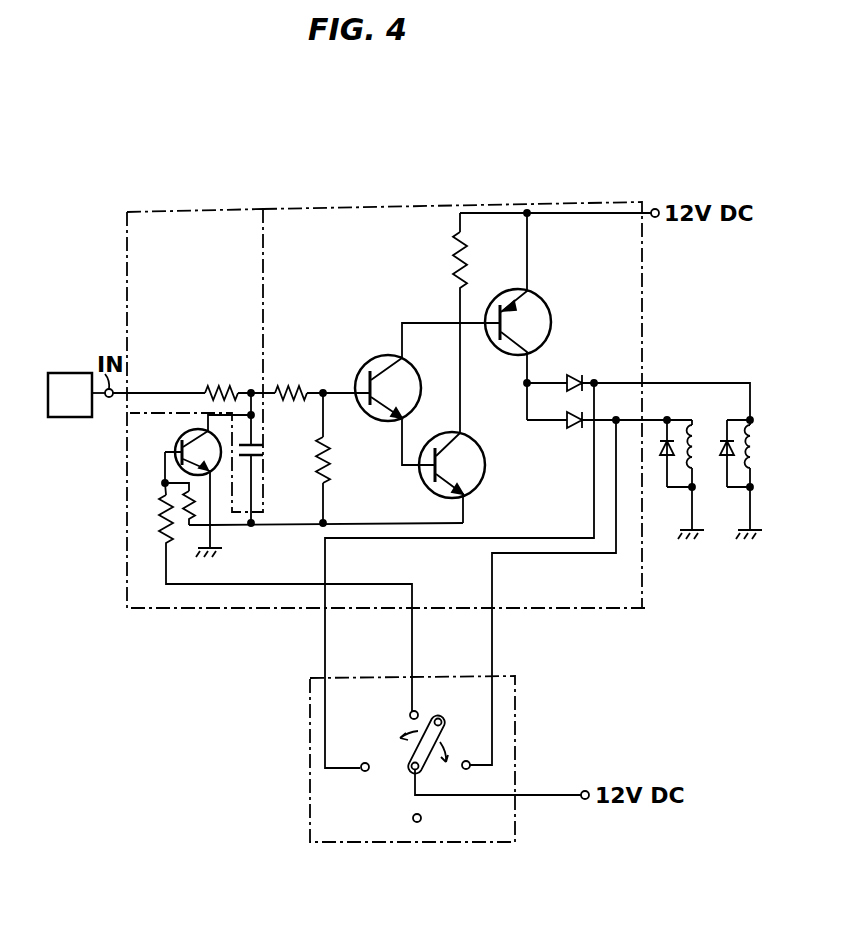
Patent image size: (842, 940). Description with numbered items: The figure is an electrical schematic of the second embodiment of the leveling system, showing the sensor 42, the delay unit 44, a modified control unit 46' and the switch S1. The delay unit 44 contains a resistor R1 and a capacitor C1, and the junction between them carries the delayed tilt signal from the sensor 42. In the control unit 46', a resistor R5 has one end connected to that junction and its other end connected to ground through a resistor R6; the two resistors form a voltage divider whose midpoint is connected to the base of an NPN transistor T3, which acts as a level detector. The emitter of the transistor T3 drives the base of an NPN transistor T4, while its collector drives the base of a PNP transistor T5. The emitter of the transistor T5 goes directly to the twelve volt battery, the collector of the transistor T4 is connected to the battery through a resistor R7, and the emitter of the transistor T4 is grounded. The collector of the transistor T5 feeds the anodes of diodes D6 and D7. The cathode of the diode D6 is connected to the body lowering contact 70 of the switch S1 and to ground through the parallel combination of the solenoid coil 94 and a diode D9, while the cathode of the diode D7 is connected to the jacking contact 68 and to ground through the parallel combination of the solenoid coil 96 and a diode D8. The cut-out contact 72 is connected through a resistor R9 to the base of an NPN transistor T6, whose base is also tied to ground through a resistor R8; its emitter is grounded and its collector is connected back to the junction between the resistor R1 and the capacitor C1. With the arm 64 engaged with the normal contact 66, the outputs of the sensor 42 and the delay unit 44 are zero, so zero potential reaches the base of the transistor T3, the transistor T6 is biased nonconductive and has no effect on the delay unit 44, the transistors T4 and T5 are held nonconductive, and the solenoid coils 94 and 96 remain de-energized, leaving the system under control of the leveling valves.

The sensor 42 is at (72, 418).
The delay unit 44 is at (202, 210).
The modified control unit 46' is at (452, 387).
The resistor R1 is at (213, 390).
The resistor R5 is at (287, 388).
The resistor R6 is at (333, 463).
The resistor R7 is at (453, 266).
The resistor R8 is at (178, 498).
The resistor R9 is at (165, 541).
The capacitor C1 is at (264, 454).
The NPN transistor T3 is at (372, 356).
The NPN transistor T4 is at (484, 478).
The PNP transistor T5 is at (551, 318).
The NPN transistor T6 is at (178, 438).
The diode D6 is at (570, 381).
The diode D7 is at (574, 428).
The diode D8 is at (668, 460).
The diode D9 is at (722, 440).
The solenoid coil 94 is at (753, 440).
The solenoid coil 96 is at (697, 470).
The switch S1 is at (517, 690).
The arm 64 is at (447, 726).
The normal contact 66 is at (420, 823).
The jacking contact 68 is at (469, 769).
The body lowering contact 70 is at (364, 772).
The cut-out contact 72 is at (409, 714).